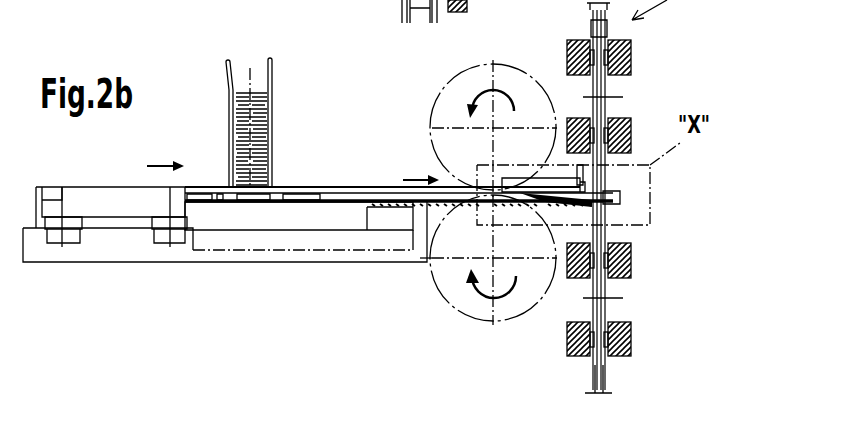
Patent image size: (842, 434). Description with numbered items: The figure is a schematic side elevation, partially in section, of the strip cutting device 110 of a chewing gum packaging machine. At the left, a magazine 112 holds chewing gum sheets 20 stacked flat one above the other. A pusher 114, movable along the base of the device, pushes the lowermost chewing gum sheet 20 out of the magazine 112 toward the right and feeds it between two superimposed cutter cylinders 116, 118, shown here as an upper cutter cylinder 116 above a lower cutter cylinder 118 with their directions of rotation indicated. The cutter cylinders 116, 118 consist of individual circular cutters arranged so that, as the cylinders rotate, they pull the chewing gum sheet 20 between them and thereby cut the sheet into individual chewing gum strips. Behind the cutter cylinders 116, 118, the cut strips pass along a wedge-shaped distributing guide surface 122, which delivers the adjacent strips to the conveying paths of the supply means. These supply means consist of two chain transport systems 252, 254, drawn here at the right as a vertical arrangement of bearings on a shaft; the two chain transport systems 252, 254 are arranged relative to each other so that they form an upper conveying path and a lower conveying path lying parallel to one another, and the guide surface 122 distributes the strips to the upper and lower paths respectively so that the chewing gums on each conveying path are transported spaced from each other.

The strip cutting device 110 is at (300, 312).
The magazine 112 is at (230, 127).
The pusher 114 is at (118, 190).
The cutter cylinder 116 is at (441, 112).
The cutter cylinder 118 is at (465, 305).
The chewing gum sheet 20 is at (268, 125).
The wedge-shaped distributing guide surface 122 is at (577, 213).
The chain transport system 252 is at (605, 95).
The chain transport system 254 is at (608, 300).